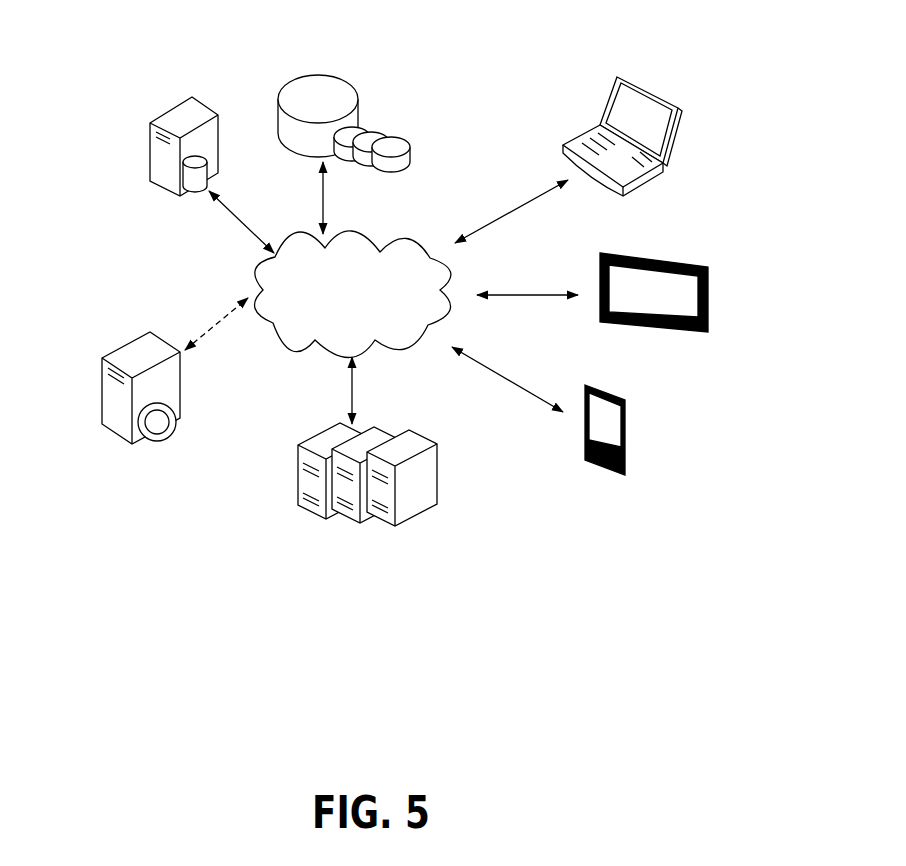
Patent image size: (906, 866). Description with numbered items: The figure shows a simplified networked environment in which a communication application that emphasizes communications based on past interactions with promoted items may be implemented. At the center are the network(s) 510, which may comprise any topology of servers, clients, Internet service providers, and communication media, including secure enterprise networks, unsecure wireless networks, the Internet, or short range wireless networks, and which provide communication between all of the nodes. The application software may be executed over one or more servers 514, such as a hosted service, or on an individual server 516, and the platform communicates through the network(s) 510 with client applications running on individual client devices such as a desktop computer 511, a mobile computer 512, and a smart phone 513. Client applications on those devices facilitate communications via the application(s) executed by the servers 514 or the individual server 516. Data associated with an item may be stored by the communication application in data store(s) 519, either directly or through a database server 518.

The network(s) 510 is at (357, 229).
The desktop computer 511 is at (653, 78).
The mobile computer 512 is at (683, 242).
The smart phone 513 is at (632, 401).
The servers 514 is at (322, 428).
The individual server 516 is at (122, 342).
The database server 518 is at (183, 198).
The data store(s) 519 is at (332, 56).